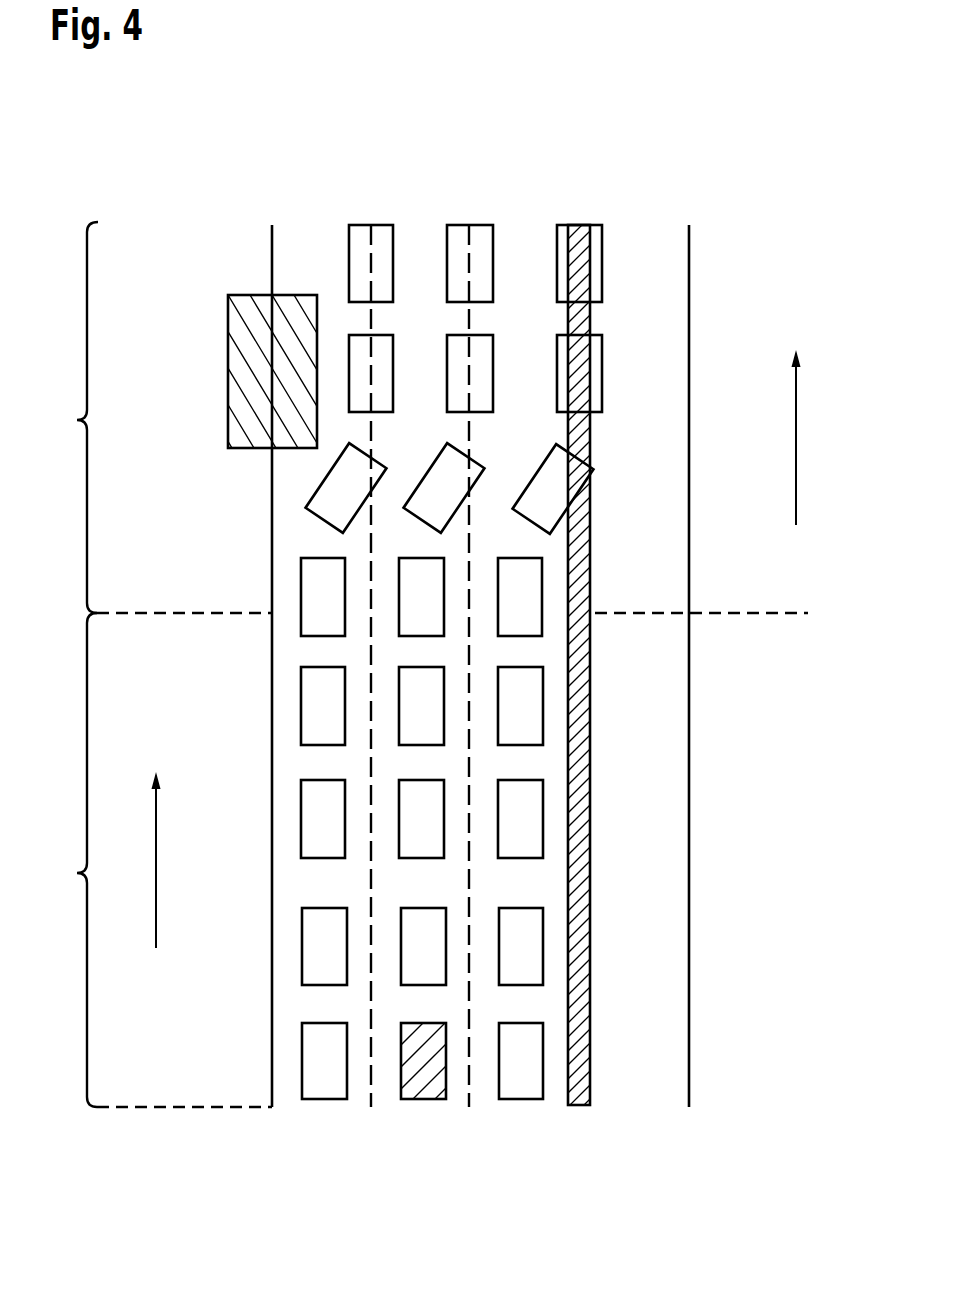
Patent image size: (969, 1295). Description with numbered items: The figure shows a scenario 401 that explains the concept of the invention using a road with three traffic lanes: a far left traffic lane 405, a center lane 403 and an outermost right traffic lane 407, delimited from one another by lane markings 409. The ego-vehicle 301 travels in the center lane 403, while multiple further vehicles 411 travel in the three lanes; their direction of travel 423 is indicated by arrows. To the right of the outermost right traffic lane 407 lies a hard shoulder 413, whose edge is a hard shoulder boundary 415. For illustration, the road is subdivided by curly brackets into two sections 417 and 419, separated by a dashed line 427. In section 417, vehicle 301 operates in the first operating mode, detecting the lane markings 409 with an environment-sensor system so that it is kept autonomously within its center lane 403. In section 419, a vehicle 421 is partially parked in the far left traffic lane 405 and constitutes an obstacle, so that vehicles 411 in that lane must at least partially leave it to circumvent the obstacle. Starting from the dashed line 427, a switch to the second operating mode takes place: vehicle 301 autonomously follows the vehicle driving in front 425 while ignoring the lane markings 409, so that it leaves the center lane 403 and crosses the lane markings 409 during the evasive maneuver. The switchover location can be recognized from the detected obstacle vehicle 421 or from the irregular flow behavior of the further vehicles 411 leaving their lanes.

The scenario 401 is at (160, 186).
The vehicle 301 is at (437, 1095).
The center lane 403 is at (387, 1087).
The far left traffic lane 405 is at (288, 1087).
The outermost right traffic lane 407 is at (557, 1087).
The lane markings 409 is at (580, 443).
The vehicles 411 is at (355, 232).
The hard shoulder 413 is at (665, 1067).
The hard shoulder boundary 415 is at (689, 260).
The section 417 is at (152, 860).
The section 419 is at (65, 417).
The vehicle 421 is at (228, 345).
The direction of travel 423 is at (793, 493).
The vehicle driving in front 425 is at (430, 985).
The dashed line 427 is at (643, 613).